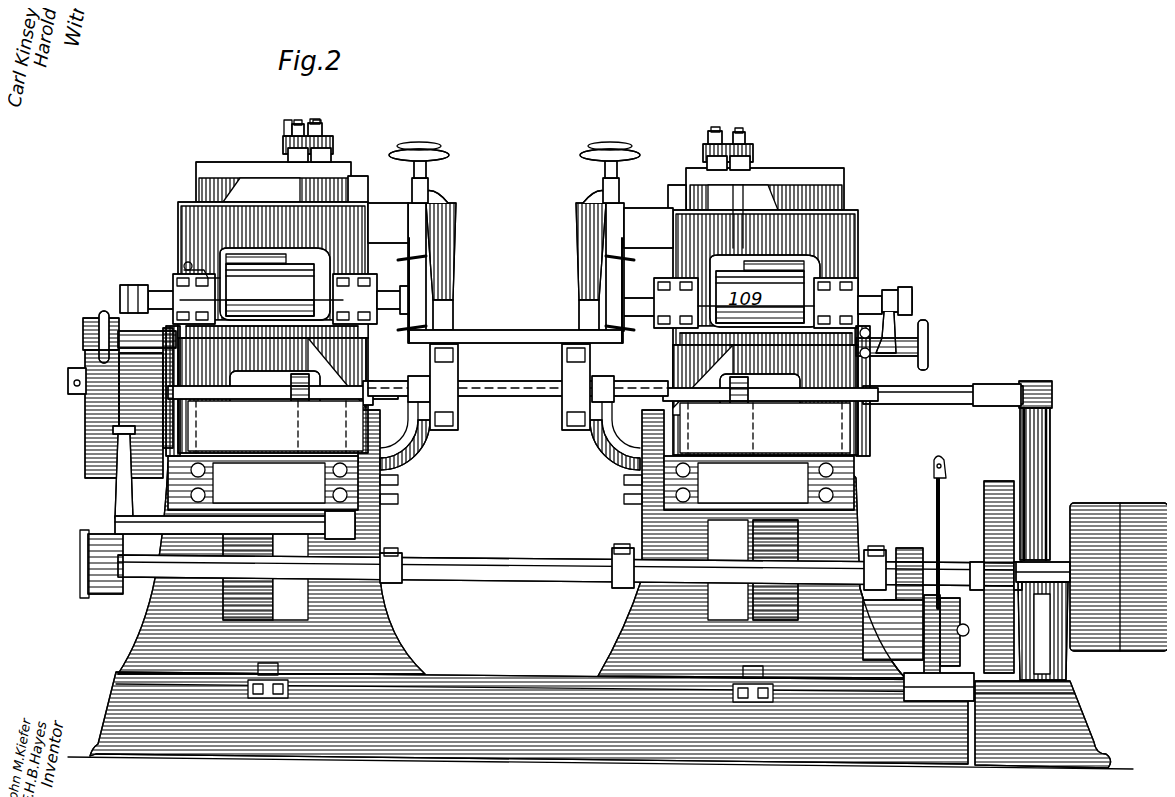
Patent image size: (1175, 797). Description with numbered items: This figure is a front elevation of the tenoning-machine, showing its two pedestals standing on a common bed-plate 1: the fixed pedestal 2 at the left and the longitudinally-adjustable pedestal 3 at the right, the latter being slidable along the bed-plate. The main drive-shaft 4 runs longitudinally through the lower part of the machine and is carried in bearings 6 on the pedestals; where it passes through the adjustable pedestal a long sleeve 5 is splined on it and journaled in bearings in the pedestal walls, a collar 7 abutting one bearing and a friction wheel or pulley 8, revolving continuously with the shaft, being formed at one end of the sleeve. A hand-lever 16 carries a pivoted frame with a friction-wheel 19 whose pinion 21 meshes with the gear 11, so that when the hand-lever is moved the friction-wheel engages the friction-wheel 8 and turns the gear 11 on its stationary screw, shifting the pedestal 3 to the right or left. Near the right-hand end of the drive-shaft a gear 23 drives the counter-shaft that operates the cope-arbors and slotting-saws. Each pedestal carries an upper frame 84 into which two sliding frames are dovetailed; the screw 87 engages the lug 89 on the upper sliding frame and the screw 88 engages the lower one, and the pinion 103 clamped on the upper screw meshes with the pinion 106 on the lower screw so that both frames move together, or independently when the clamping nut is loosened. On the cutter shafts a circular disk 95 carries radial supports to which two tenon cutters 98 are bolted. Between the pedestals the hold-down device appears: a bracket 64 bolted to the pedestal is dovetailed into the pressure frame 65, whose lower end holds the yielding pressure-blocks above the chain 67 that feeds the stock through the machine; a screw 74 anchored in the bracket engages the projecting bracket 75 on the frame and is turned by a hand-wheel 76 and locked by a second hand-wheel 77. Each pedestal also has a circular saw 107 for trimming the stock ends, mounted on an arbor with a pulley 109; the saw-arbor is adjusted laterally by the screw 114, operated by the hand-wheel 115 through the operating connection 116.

The bed-plate 1 is at (108, 712).
The fixed pedestal 2 is at (140, 625).
The longitudinally-adjustable pedestal 3 is at (610, 628).
The main drive-shaft 4 is at (512, 552).
The long sleeve 5 is at (718, 560).
The bearing 6 is at (614, 540).
The collar 7 is at (604, 568).
The friction wheel or pulley 8 is at (898, 538).
The gear 11 is at (930, 655).
The hand-lever 16 is at (930, 452).
The friction-wheel 19 is at (860, 605).
The pinion 21 is at (950, 614).
The gear 23 is at (990, 473).
The bracket 64 is at (520, 267).
The frame or casing 65 is at (568, 228).
The chain 67 is at (554, 422).
The screw 74 is at (404, 182).
The projecting bracket 75 is at (578, 182).
The hand-wheel 76 is at (440, 148).
The second hand-wheel 77 is at (408, 140).
The upper frame 84 is at (205, 154).
The screw 87 is at (312, 114).
The screw 88 is at (284, 117).
The lug 89 is at (735, 205).
The circular plate or disk 95 is at (515, 323).
The tenon cutters or knives 98 is at (440, 252).
The pinion 103 is at (324, 135).
The pinion 106 is at (275, 136).
The circular saw 107 is at (402, 340).
The pulley 109 is at (275, 284).
The screw 114 is at (283, 408).
The hand-wheel 115 is at (80, 322).
The operating connection 116 is at (130, 277).